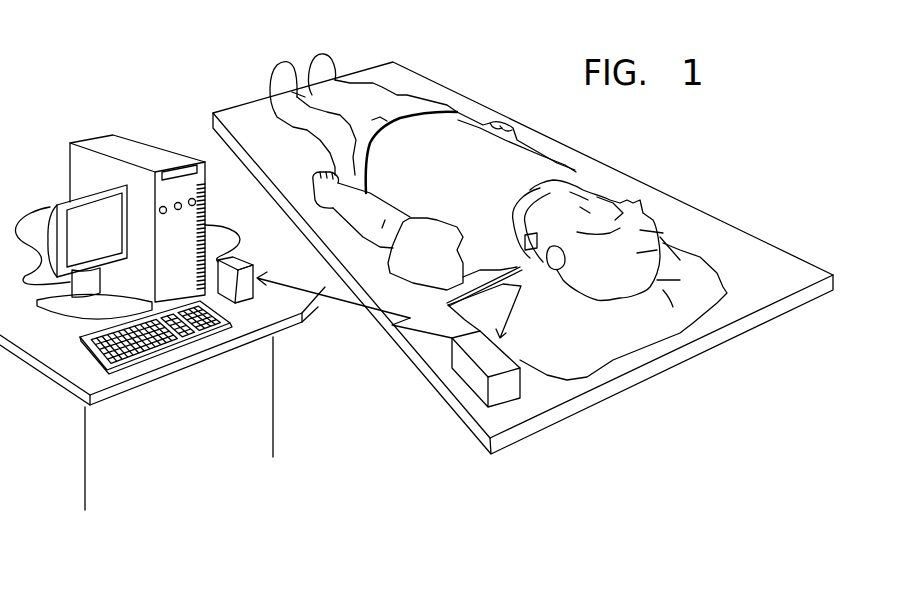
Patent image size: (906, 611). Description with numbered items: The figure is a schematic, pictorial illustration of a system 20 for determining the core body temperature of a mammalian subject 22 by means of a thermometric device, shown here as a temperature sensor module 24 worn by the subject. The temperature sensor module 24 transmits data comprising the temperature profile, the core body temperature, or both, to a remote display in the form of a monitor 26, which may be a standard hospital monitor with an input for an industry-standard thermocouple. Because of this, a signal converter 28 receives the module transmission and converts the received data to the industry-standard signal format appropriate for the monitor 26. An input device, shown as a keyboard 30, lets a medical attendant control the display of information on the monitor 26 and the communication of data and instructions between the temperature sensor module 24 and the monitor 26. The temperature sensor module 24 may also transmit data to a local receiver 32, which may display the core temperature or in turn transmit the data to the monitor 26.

The system 20 is at (139, 68).
The mammalian subject 22 is at (654, 199).
The temperature sensor module 24 is at (517, 203).
The monitor 26 is at (90, 170).
The signal converter 28 is at (240, 263).
The keyboard 30 is at (143, 347).
The local receiver 32 is at (495, 358).